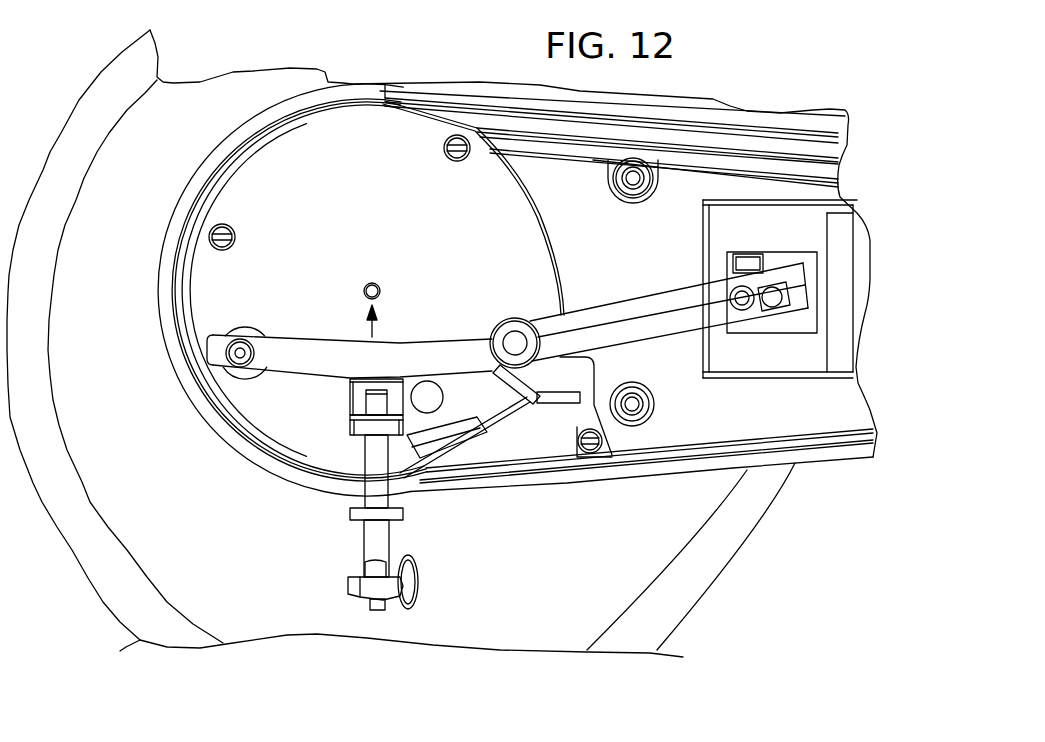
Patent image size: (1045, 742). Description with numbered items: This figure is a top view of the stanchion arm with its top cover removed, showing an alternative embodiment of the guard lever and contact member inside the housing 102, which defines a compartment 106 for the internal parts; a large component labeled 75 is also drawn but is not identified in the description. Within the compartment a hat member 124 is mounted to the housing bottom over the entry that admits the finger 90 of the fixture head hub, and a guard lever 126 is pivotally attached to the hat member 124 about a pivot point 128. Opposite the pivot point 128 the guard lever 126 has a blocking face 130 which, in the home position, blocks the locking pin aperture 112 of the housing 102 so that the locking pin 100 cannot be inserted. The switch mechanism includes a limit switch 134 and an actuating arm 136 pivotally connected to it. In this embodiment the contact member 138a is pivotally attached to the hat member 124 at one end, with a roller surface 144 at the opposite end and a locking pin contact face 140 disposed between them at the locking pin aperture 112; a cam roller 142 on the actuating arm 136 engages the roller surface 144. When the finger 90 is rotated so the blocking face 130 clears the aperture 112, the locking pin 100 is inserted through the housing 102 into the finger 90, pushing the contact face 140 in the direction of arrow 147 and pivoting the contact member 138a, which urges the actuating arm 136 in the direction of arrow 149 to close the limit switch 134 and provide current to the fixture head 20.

The fixture head 20 is at (78, 535).
The housing wall 75 is at (110, 352).
The finger 90 is at (348, 392).
The locking pin 100 is at (419, 597).
The housing 102 is at (793, 466).
The compartment 106 is at (672, 283).
The locking pin aperture 112 is at (362, 525).
The hat member 124 is at (345, 214).
The guard lever 126 is at (530, 406).
The pivot point 128 is at (369, 282).
The blocking face 130 is at (443, 441).
The limit switch 134 is at (755, 362).
The actuating arm 136 is at (657, 341).
The contact member 138a is at (437, 356).
The locking pin contact face 140 is at (333, 345).
The cam roller 142 is at (518, 321).
The roller surface 144 is at (576, 340).
The arrow 147 is at (370, 337).
The arrow 149 is at (670, 292).